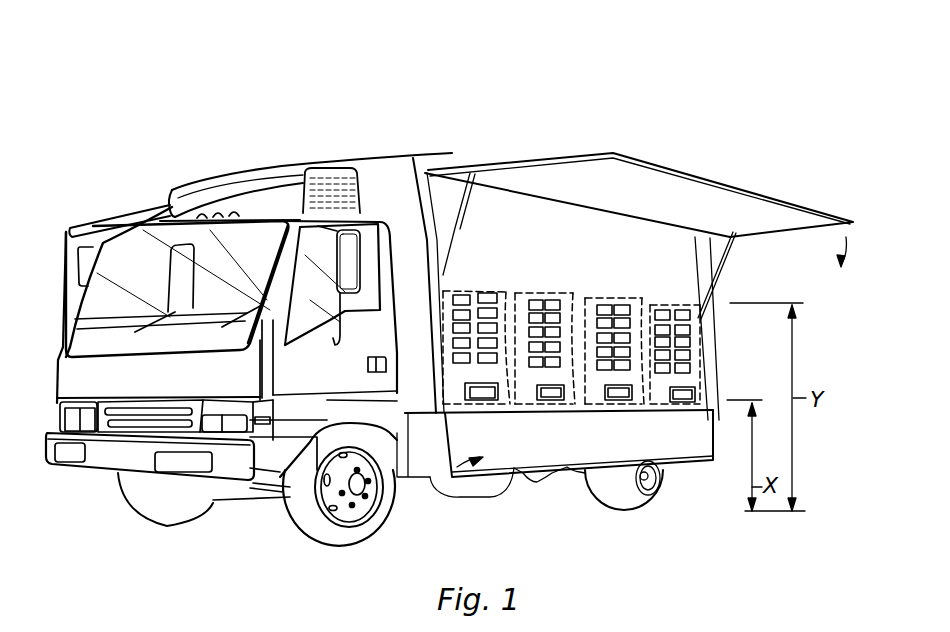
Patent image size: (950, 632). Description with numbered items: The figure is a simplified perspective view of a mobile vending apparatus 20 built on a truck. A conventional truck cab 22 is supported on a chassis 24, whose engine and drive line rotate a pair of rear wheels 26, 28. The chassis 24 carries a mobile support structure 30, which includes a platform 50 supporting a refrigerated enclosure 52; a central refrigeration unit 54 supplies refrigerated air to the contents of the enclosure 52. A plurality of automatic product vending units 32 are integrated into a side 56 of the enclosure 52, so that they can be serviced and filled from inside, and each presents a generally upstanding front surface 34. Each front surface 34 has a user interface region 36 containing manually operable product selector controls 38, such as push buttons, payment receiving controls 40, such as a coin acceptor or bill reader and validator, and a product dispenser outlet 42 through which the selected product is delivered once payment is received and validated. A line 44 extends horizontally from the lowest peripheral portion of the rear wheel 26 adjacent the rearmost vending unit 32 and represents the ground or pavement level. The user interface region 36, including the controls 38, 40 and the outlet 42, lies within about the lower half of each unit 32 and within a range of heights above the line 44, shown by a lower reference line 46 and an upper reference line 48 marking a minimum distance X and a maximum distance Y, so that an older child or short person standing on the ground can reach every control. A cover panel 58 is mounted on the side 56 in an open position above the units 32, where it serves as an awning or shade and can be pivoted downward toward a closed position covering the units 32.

The mobile vending apparatus 20 is at (714, 92).
The truck cab 22 is at (57, 365).
The chassis 24 is at (430, 478).
The rear wheel 26 is at (610, 517).
The rear wheel 28 is at (517, 478).
The mobile support structure 30 is at (413, 148).
The automatic product vending unit 32 is at (488, 270).
The front surface 34 is at (500, 308).
The user interface region 36 is at (468, 290).
The product selector control 38 is at (553, 272).
The payment receiving control 40 is at (455, 360).
The product dispenser outlet 42 is at (483, 393).
The line 44 is at (723, 511).
The intermediate height reference 46 is at (737, 405).
The top height reference 48 is at (782, 303).
The platform 50 is at (416, 422).
The refrigerated enclosure 52 is at (205, 180).
The central refrigeration unit 54 is at (277, 172).
The side 56 is at (447, 197).
The cover panel 58 is at (806, 206).